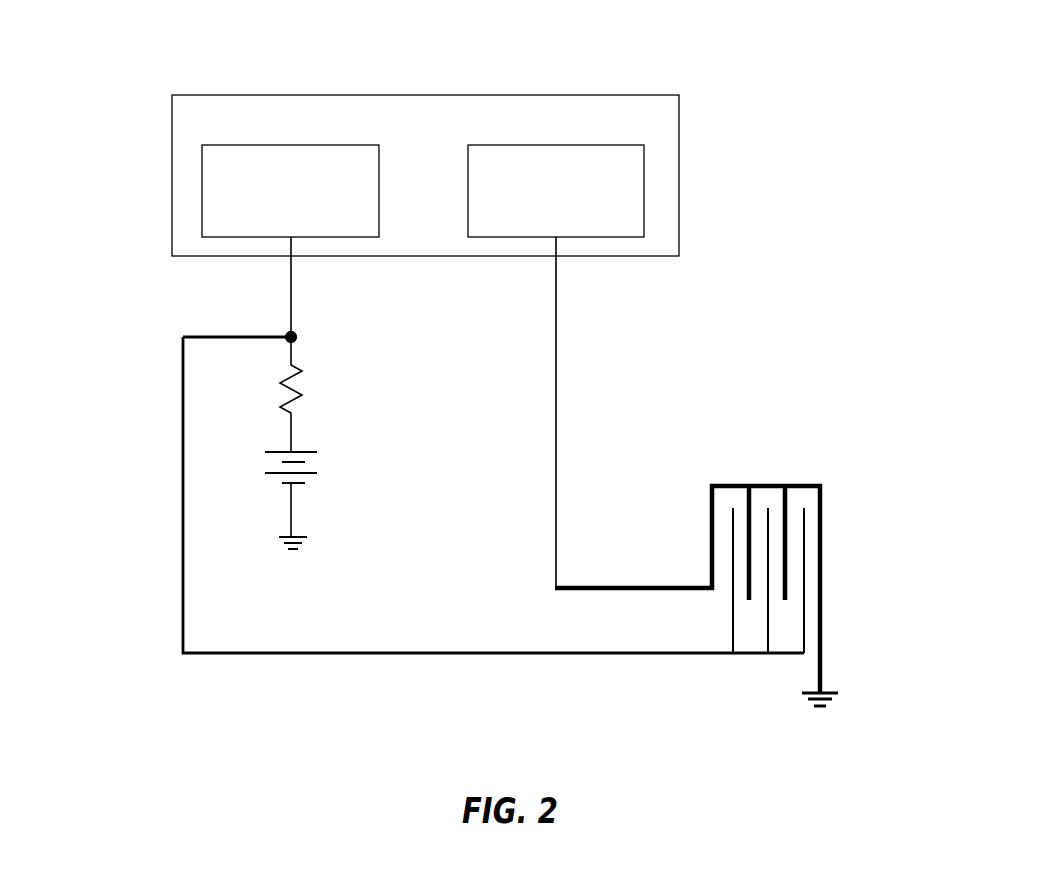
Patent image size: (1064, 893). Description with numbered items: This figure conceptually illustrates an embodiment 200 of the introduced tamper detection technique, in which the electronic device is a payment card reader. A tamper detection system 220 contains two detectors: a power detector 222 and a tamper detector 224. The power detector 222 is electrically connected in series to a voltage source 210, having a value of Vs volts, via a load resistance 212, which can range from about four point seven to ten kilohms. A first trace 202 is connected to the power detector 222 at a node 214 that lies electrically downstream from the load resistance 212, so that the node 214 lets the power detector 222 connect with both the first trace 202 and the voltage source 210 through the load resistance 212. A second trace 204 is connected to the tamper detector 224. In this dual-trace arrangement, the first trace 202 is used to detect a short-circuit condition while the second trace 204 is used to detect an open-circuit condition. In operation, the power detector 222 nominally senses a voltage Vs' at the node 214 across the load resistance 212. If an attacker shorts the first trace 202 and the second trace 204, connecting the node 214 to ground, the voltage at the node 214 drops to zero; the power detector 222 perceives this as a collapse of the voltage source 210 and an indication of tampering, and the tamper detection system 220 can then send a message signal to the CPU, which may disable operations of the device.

The embodiment 200 is at (998, 73).
The tamper detection system 220 is at (425, 175).
The power detector 222 is at (290, 191).
The tamper detector 224 is at (556, 191).
The node 214 is at (294, 331).
The load resistance 212 is at (303, 384).
The voltage source 210 is at (312, 452).
The first trace 202 is at (805, 543).
The second trace 204 is at (819, 602).